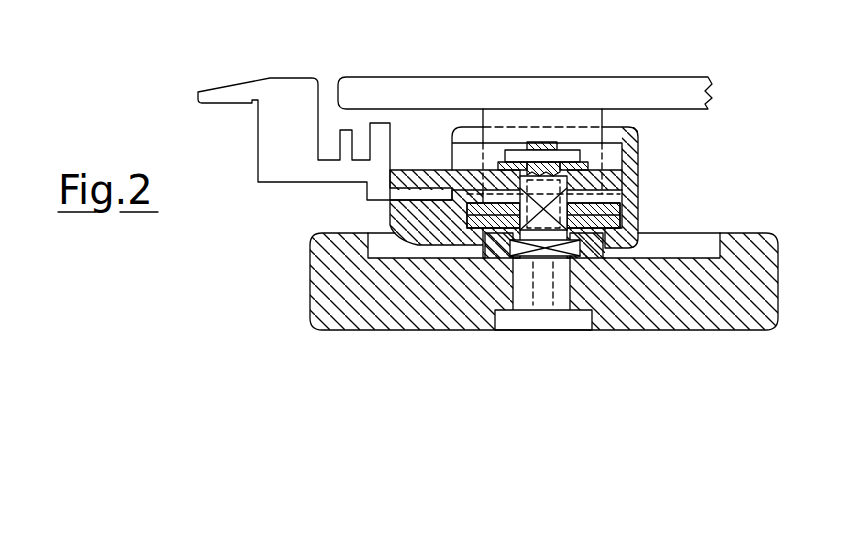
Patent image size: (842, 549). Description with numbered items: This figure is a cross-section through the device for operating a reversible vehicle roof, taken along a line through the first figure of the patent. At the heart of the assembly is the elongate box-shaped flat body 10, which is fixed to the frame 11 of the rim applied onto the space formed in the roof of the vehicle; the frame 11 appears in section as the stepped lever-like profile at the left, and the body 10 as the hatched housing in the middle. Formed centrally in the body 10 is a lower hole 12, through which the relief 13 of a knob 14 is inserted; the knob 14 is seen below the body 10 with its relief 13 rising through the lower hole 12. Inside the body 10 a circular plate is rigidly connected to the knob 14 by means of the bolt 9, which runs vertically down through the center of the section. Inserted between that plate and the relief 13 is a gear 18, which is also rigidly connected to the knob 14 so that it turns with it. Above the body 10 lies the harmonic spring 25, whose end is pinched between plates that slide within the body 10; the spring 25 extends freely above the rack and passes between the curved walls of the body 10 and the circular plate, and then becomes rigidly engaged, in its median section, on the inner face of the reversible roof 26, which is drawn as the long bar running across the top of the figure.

The bolt 9 is at (553, 166).
The body 10 is at (443, 238).
The frame 11 is at (282, 162).
The lower hole 12 is at (475, 245).
The relief 13 is at (500, 250).
The knob 14 is at (365, 305).
The gear 18 is at (560, 213).
The harmonic spring 25 is at (507, 117).
The reversible roof 26 is at (677, 92).